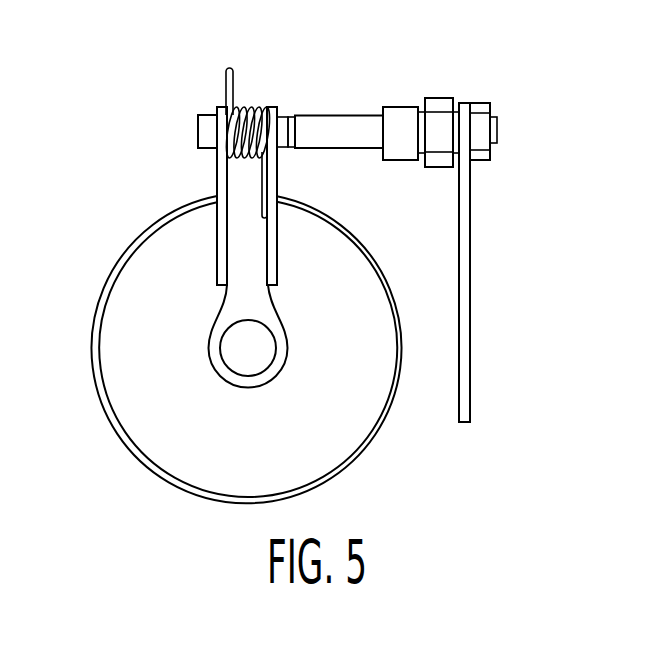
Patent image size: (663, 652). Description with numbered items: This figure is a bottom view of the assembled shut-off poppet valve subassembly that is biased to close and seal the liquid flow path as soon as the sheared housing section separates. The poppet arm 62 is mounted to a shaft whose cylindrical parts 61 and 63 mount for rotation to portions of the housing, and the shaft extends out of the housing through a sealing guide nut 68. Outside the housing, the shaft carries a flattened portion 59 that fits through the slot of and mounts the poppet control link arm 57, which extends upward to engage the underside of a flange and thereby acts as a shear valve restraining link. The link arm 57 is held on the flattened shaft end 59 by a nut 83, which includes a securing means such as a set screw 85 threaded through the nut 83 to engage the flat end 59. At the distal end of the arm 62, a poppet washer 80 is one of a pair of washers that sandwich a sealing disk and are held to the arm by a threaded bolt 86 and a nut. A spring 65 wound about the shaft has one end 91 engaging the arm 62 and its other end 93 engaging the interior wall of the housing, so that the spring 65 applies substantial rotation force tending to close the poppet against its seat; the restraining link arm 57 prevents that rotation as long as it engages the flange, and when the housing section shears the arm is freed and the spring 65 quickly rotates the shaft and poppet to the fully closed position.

The poppet control link arm 57 is at (467, 353).
The flattened portion 59 is at (400, 120).
The cylindrical part 61 is at (208, 130).
The poppet arm 62 is at (243, 256).
The cylindrical part 63 is at (342, 115).
The spring 65 is at (245, 110).
The sealing guide nut 68 is at (440, 104).
The poppet washer 80 is at (343, 443).
The nut 83 is at (478, 155).
The set screw 85 is at (480, 110).
The threaded bolt 86 is at (237, 362).
The spring end 91 is at (250, 181).
The spring end 93 is at (225, 83).